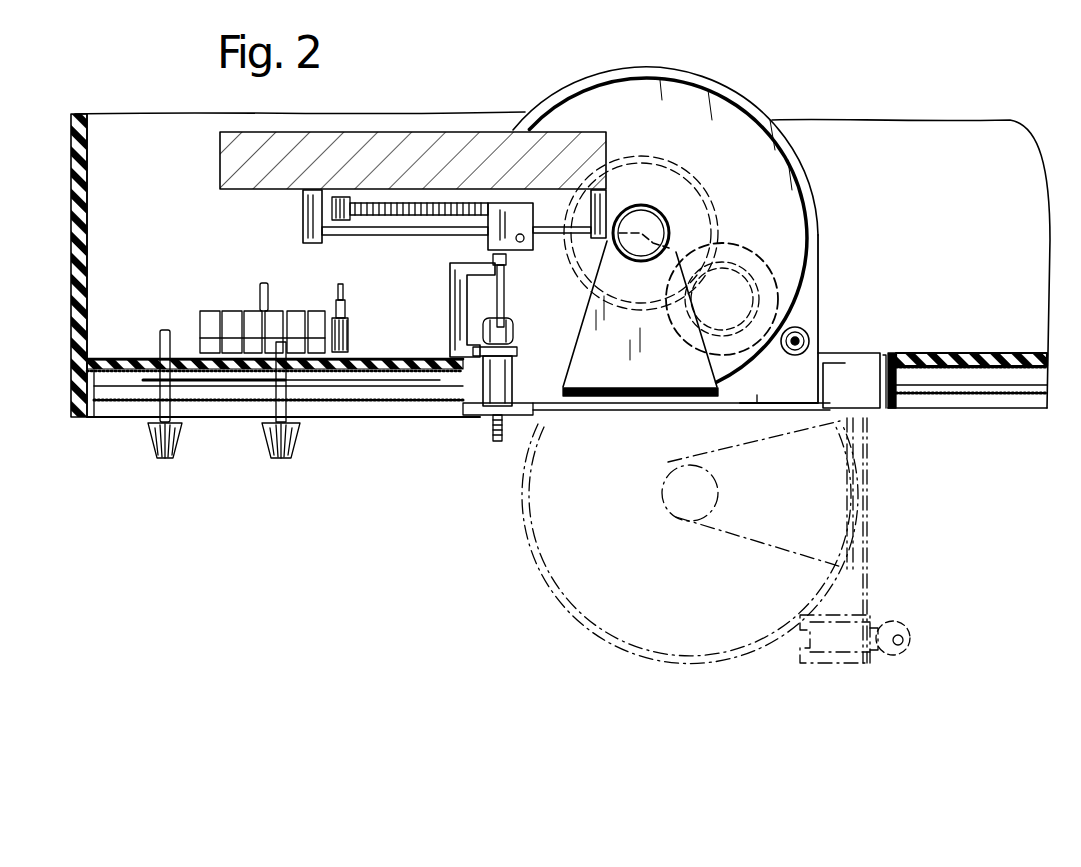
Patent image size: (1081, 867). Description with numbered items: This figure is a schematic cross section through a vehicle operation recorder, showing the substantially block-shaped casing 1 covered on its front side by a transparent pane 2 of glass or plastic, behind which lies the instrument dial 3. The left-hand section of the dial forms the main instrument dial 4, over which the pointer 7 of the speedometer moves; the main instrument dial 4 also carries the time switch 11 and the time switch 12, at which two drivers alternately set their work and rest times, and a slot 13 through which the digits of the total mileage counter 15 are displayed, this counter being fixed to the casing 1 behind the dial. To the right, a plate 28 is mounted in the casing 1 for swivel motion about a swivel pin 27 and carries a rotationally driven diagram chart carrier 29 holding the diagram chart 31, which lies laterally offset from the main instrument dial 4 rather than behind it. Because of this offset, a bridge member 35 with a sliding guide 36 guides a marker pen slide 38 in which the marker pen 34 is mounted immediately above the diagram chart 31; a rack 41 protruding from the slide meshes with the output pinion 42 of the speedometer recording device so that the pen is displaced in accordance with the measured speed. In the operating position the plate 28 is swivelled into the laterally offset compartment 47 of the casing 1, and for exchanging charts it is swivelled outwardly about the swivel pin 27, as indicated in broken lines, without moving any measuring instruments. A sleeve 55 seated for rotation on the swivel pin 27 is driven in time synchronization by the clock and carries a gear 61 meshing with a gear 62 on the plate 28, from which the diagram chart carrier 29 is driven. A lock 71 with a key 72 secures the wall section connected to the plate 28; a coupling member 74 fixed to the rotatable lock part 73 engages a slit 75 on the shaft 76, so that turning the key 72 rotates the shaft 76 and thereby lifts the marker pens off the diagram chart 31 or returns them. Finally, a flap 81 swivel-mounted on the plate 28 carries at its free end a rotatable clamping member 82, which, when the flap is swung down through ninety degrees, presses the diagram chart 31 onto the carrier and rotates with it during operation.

The casing 1 is at (82, 418).
The transparent pane 2 is at (400, 402).
The instrument dial 3 is at (1012, 368).
The main instrument dial 4 is at (350, 370).
The pointer 7 is at (215, 386).
The time switch 11 is at (165, 460).
The time switch 12 is at (282, 460).
The slot 13 is at (200, 352).
The total mileage counter 15 is at (297, 322).
The swivel pin 27 is at (800, 410).
The plate 28 is at (815, 214).
The diagram chart carrier 29 is at (700, 175).
The diagram chart 31 is at (790, 175).
The marker pen 34 is at (521, 233).
The bridge member 35 is at (400, 131).
The sliding guide 36 is at (422, 236).
The marker pen slide 38 is at (503, 222).
The rack 41 is at (388, 216).
The output pinion 42 is at (302, 208).
The compartment 47 is at (880, 408).
The sleeve 55 is at (822, 365).
The gear 61 is at (803, 334).
The gear 62 is at (795, 248).
The lock 71 is at (488, 382).
The key 72 is at (496, 443).
The rotatable lock part 73 is at (515, 352).
The coupling member 74 is at (507, 340).
The slit 75 is at (505, 316).
The shaft 76 is at (506, 286).
The flap 81 is at (600, 396).
The clamping member 82 is at (646, 226).